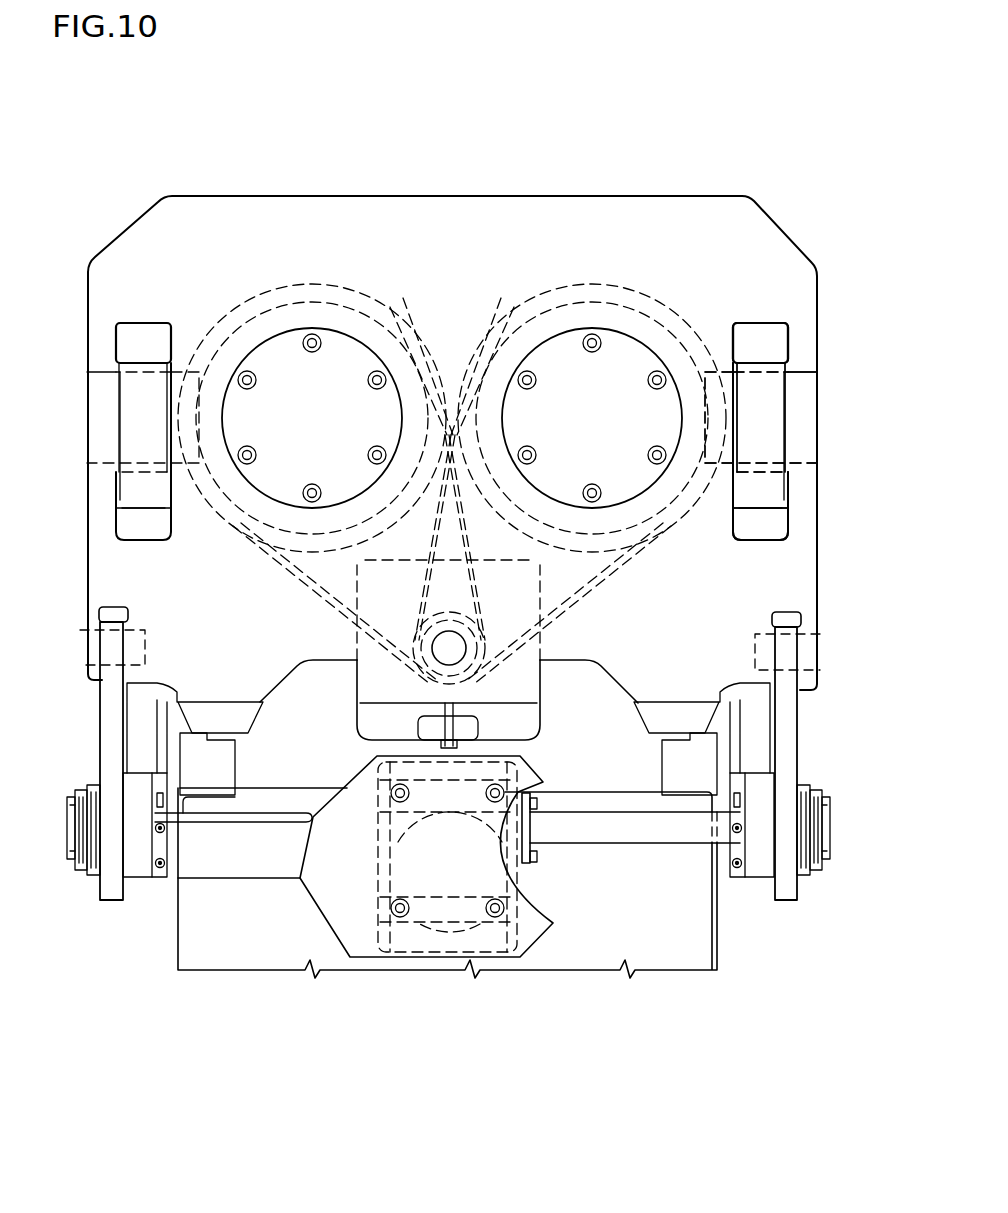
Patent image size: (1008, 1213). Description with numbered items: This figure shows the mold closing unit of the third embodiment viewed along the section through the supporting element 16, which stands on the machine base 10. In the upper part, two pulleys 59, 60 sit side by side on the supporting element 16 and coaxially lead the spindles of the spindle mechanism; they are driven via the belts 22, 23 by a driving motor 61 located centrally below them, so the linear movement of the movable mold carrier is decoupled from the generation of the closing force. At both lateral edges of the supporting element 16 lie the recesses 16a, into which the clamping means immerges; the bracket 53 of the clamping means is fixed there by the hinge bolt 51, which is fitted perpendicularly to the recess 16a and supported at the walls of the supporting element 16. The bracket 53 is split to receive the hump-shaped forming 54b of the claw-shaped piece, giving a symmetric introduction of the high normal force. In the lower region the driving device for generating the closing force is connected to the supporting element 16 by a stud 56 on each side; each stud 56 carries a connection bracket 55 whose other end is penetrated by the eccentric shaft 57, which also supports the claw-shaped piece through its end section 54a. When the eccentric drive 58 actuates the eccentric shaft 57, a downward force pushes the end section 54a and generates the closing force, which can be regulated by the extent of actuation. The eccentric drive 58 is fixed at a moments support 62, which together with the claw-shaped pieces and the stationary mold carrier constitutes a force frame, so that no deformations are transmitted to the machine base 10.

The machine base 10 is at (184, 922).
The supporting element 16 is at (487, 222).
The recess 16a is at (140, 320).
The belt 22 is at (397, 302).
The belt 23 is at (640, 268).
The hinge bolt 51 is at (135, 408).
The bracket 53 is at (138, 483).
The end section 54a is at (140, 862).
The hump-shaped forming 54b is at (148, 705).
The connection bracket 55 is at (108, 723).
The stud 56 is at (80, 630).
The eccentric shaft 57 is at (286, 818).
The eccentric drive 58 is at (462, 871).
The pulley 59 is at (222, 297).
The pulley 60 is at (692, 302).
The driving motor 61 is at (556, 648).
The moments support 62 is at (348, 871).